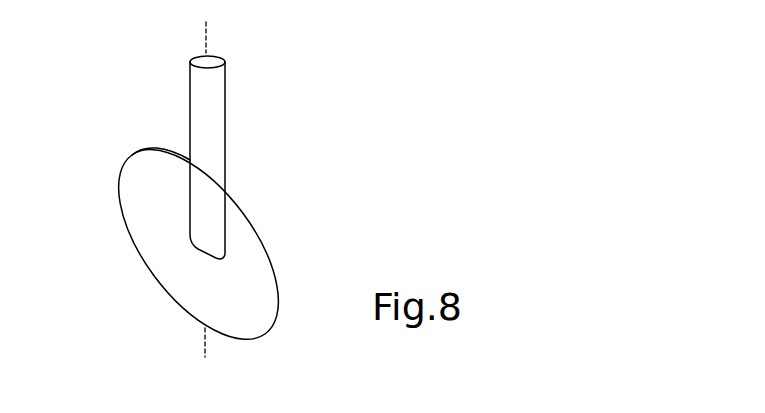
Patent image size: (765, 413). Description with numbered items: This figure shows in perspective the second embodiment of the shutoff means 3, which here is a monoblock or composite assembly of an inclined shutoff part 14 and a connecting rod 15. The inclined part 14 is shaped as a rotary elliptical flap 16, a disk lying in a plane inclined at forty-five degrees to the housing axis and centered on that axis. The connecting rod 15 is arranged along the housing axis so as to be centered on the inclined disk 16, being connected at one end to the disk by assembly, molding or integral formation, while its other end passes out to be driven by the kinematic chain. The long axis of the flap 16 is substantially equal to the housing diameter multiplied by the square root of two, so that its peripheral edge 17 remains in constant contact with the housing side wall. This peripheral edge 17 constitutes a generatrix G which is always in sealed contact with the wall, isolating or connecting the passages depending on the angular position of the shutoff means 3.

The first shutoff means 3 is at (215, 225).
The inclined shutoff part 14 is at (187, 306).
The connecting rod 15 is at (212, 122).
The elliptical flap 16 is at (143, 212).
The peripheral edge 17 is at (143, 167).
The generatrix G is at (263, 338).